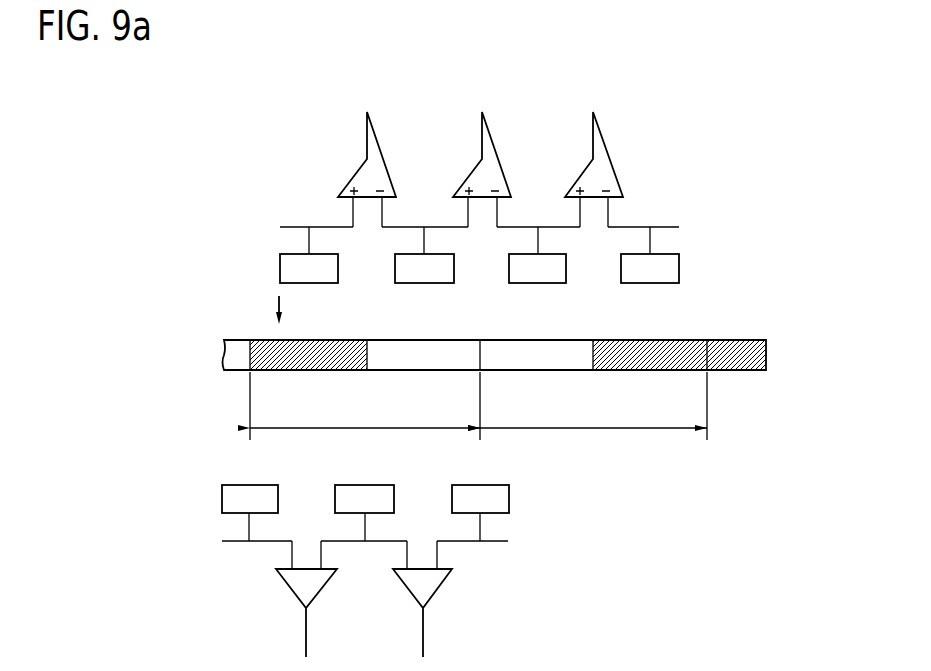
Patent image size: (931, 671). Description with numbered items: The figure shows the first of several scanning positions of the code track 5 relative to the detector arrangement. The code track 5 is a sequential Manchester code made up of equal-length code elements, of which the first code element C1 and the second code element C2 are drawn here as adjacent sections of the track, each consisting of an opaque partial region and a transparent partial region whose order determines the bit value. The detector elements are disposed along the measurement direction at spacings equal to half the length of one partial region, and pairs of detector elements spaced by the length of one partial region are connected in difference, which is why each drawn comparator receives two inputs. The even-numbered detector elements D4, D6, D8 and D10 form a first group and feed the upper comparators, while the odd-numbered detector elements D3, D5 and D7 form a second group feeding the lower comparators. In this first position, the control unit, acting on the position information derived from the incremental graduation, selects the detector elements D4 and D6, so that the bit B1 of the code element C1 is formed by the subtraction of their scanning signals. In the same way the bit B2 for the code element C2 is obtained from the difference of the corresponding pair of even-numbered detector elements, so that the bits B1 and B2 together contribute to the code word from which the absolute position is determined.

The code track 5 is at (760, 356).
The digital value (bit) of first code element B1 is at (367, 152).
The digital value (bit) of second code element B2 is at (594, 152).
The first code element C1 is at (365, 406).
The second code element C2 is at (593, 406).
The detector element D3 is at (250, 512).
The detector element D4 is at (309, 257).
The detector element D5 is at (364, 512).
The detector element D6 is at (424, 257).
The detector element D7 is at (480, 512).
The detector element D8 is at (537, 257).
The detector element D10 is at (650, 257).